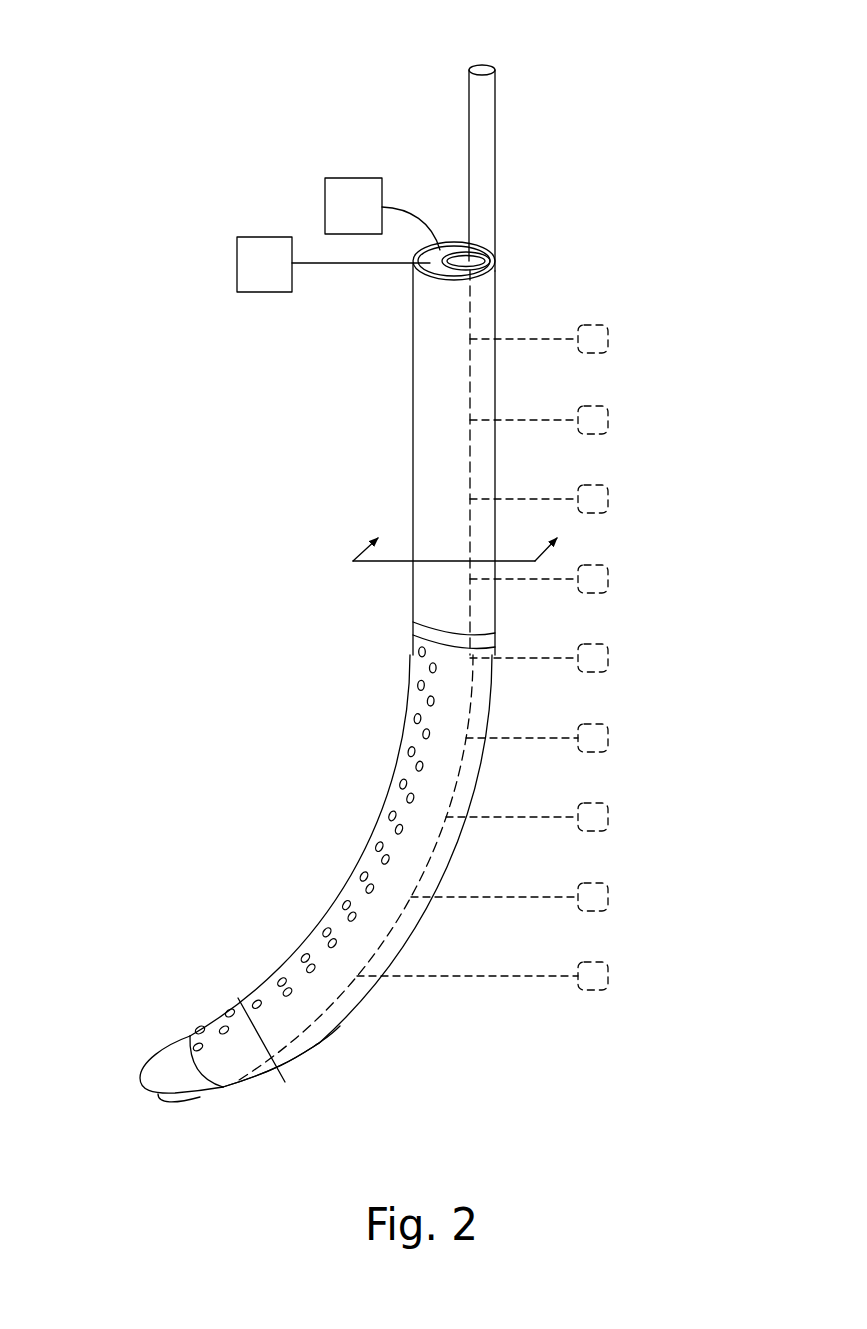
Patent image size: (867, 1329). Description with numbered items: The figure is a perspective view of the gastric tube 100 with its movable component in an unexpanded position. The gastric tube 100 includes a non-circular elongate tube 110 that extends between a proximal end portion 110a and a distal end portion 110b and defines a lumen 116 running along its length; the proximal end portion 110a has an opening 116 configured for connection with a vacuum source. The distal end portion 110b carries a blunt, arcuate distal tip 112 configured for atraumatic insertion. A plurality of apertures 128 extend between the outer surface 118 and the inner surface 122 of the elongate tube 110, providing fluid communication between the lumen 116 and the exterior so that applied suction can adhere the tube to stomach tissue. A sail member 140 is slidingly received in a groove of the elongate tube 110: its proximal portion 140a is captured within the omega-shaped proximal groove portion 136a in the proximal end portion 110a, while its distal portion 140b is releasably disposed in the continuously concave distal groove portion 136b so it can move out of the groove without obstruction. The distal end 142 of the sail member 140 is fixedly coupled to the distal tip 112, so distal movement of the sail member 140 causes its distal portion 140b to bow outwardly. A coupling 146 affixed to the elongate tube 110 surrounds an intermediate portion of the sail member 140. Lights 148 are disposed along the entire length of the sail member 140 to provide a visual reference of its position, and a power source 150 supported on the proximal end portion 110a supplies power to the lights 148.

The gastric tube 100 is at (400, 582).
The elongate tube 110 is at (408, 413).
The proximal end portion 110a is at (413, 333).
The distal end portion 110b is at (345, 884).
The distal tip 112 is at (147, 1055).
The lumen 116 is at (492, 271).
The outer surface 118 is at (410, 703).
The inner surface 122 is at (285, 1082).
The apertures 128 is at (361, 876).
The proximal portion of groove 136a is at (465, 257).
The distal portion of groove 136b is at (310, 1047).
The sail member 140 is at (463, 110).
The proximal portion of sail member 140a is at (470, 487).
The distal portion of sail member 140b is at (340, 995).
The distal end 142 is at (182, 1103).
The coupling 146 is at (413, 622).
The lights 148 is at (615, 339).
The power source 150 is at (325, 207).